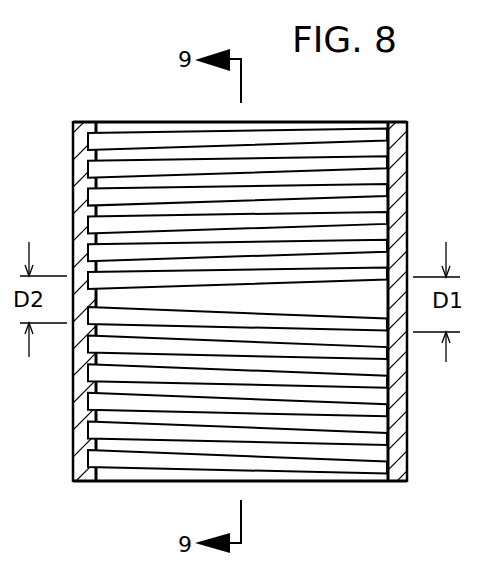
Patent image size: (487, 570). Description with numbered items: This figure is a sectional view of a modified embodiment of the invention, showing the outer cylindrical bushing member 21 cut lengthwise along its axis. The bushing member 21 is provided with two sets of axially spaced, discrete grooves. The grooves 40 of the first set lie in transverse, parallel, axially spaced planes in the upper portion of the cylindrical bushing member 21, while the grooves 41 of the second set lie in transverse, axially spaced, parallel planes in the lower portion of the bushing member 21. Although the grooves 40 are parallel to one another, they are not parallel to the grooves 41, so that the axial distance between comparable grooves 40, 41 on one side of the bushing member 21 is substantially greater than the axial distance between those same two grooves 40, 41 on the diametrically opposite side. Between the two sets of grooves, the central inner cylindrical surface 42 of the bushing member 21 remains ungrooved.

The outer cylindrical bushing member 21 is at (400, 215).
The grooves 40 is at (328, 140).
The grooves 41 is at (330, 437).
The central inner cylindrical surface 42 is at (340, 306).